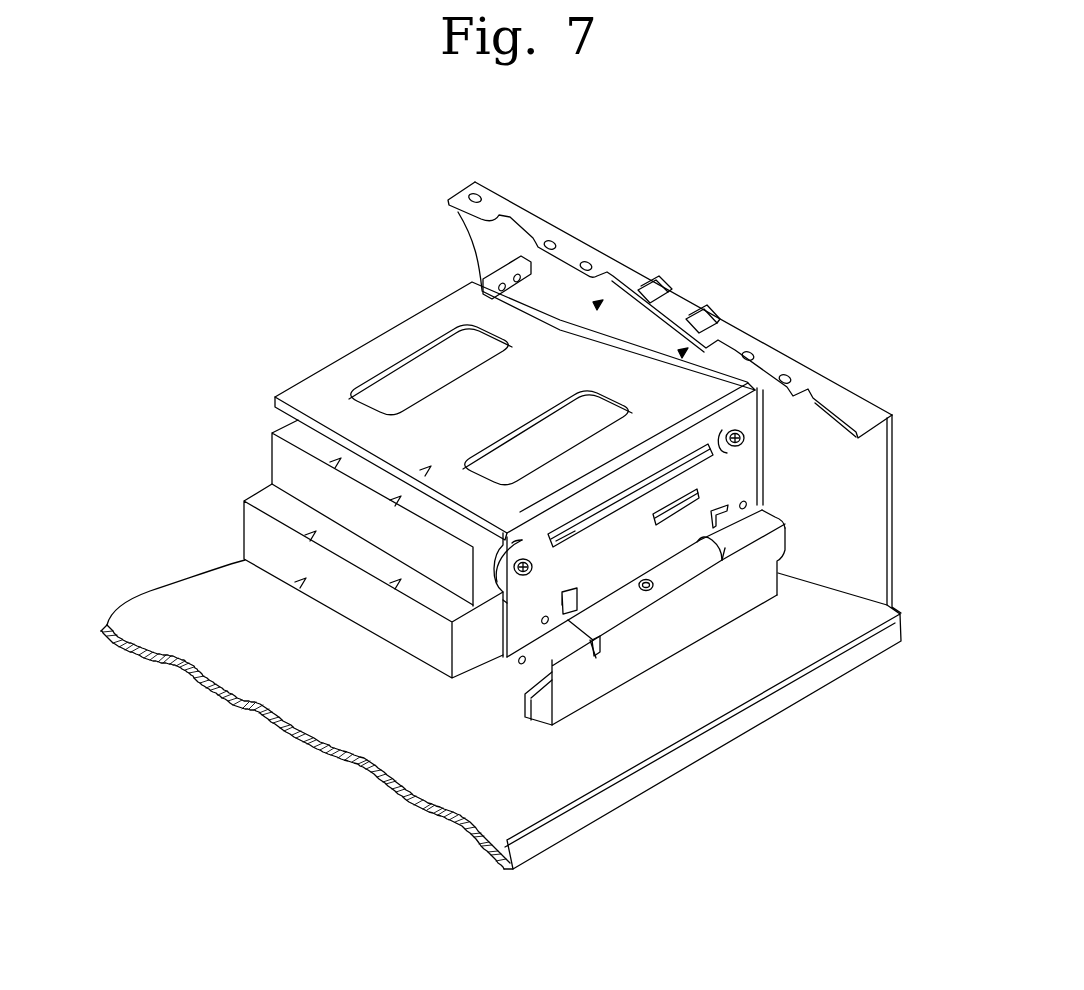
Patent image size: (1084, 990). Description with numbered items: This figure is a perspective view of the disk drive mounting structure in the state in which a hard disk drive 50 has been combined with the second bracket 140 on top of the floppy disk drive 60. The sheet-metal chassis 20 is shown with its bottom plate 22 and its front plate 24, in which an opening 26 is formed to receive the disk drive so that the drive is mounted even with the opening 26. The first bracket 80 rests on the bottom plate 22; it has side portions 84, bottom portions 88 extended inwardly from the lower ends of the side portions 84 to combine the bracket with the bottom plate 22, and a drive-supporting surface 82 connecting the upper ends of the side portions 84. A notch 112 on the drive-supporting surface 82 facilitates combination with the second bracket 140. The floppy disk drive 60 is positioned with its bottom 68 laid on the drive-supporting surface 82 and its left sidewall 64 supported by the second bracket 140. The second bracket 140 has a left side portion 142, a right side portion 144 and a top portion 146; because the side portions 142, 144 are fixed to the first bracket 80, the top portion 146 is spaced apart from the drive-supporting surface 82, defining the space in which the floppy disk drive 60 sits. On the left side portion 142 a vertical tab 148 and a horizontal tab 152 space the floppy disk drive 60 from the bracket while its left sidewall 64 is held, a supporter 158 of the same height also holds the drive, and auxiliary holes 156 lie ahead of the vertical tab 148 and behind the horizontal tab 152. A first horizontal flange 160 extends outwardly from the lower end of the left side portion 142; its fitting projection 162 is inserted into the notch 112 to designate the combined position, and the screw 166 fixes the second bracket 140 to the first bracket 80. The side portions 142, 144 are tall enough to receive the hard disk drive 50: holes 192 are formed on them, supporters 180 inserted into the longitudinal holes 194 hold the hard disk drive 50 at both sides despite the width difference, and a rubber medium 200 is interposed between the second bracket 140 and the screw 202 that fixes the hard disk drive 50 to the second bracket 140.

The chassis 20 is at (821, 356).
The bottom plate 22 is at (575, 773).
The front plate 24 is at (867, 480).
The opening 26 is at (804, 462).
The hard disk drive 50 is at (298, 432).
The floppy disk drive 60 is at (331, 610).
The left sidewall 64 is at (460, 658).
The bottom 68 is at (367, 632).
The first bracket 80 is at (661, 624).
The drive-supporting surface 82 is at (767, 525).
The side portions 84 is at (773, 547).
The bottom portions 88 is at (535, 705).
The notch 112 is at (597, 656).
The second bracket 140 is at (552, 453).
The left side portion 142 is at (654, 547).
The right side portion 144 is at (527, 272).
The top portion 146 is at (440, 322).
The vertical tab 148 is at (722, 525).
The horizontal tab 152 is at (574, 608).
The auxiliary holes 156 is at (522, 662).
The supporter 158 is at (608, 488).
The first horizontal flange 160 is at (693, 560).
The fitting projection 162 is at (596, 645).
The screw 166 is at (653, 584).
The supporters 180 is at (680, 468).
The holes 192 is at (520, 553).
The longitudinal holes 194 is at (590, 505).
The rubber medium 200 is at (503, 600).
The screw 202 is at (534, 568).